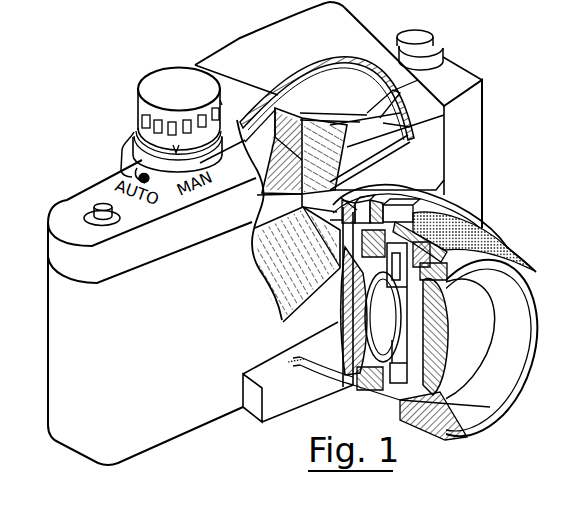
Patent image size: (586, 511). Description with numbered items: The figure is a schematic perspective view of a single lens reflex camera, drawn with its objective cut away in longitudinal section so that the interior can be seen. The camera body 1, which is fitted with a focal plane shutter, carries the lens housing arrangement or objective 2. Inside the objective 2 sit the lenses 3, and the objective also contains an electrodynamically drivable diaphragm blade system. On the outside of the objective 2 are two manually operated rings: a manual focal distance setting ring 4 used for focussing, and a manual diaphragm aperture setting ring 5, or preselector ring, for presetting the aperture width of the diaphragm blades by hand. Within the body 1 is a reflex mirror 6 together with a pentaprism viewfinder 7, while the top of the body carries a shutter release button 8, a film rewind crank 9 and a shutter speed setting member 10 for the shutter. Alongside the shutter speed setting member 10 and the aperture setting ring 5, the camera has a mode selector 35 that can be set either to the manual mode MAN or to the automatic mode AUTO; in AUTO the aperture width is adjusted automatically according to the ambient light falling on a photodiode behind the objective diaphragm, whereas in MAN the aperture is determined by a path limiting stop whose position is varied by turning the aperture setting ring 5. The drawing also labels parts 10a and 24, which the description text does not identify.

The body 1 is at (469, 118).
The objective 2 is at (510, 347).
The lenses 3 is at (345, 310).
The manual focal distance setting ring 4 is at (507, 245).
The manual diaphragm aperture setting ring 5 is at (430, 203).
The reflex mirror 6 is at (287, 260).
The pentaprism viewfinder 7 is at (318, 140).
The shutter release button 8 is at (98, 207).
The film rewind crank 9 is at (430, 43).
The shutter speed setting member 10 is at (160, 82).
The dial flange 10a is at (221, 100).
The aperture plate 24 is at (392, 305).
The mode selector 35 is at (140, 177).